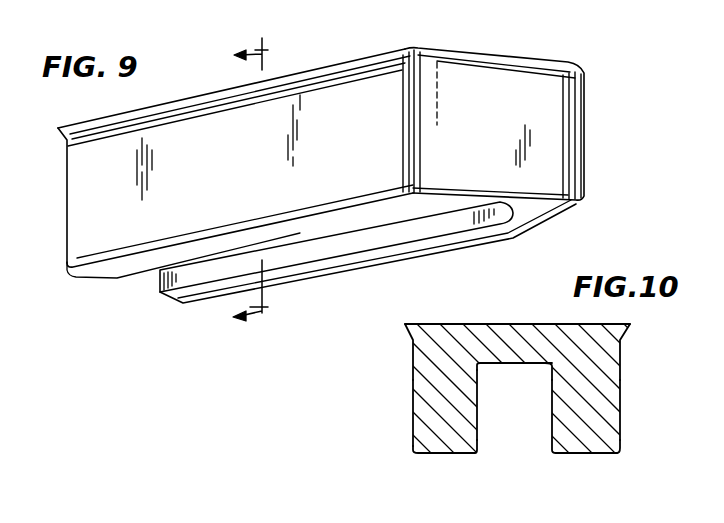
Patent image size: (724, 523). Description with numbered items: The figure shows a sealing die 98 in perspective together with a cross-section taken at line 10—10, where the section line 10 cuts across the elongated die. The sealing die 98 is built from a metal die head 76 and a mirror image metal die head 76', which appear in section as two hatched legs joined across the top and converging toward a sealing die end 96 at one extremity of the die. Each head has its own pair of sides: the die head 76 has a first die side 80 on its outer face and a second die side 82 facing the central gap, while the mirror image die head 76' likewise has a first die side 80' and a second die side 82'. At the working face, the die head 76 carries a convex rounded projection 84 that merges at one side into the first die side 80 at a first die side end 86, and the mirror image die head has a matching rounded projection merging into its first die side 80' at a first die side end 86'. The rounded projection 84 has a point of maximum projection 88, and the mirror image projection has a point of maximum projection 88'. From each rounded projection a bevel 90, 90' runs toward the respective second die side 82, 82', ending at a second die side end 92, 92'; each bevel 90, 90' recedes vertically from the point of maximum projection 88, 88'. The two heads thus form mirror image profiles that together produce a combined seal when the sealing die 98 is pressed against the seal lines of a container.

In FIG. 9, the section line 10 is at (263, 180).
In FIG. 9, the metal die head 76 is at (216, 231).
In FIG. 10, the metal die head 76 is at (396, 413).
In FIG. 9, the mirror image metal die head 76' is at (352, 273).
In FIG. 10, the mirror image metal die head 76' is at (638, 353).
In FIG. 9, the first die side 80 is at (215, 156).
In FIG. 10, the first die side 80 is at (385, 352).
In FIG. 9, the first die side 80' is at (306, 259).
In FIG. 10, the first die side 80' is at (644, 410).
In FIG. 10, the second die side 82 is at (497, 378).
In FIG. 10, the second die side 82' is at (533, 390).
In FIG. 10, the convex rounded projection 84 is at (412, 457).
In FIG. 10, the first die side end 86 is at (391, 448).
In FIG. 10, the first die side end 86' is at (643, 455).
In FIG. 10, the point of maximum projection 88 is at (441, 475).
In FIG. 10, the point of maximum projection 88' is at (593, 482).
In FIG. 10, the bevel 90 is at (467, 461).
In FIG. 10, the bevel 90' is at (565, 475).
In FIG. 10, the second die side end 92 is at (501, 426).
In FIG. 10, the second die side end 92' is at (534, 416).
In FIG. 9, the sealing die end 96 is at (581, 201).
In FIG. 9, the sealing die 98 is at (599, 109).
In FIG. 10, the sealing die 98 is at (345, 398).